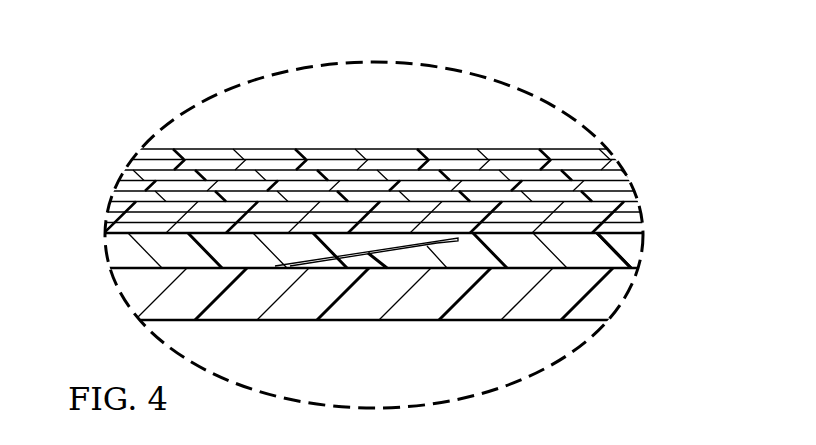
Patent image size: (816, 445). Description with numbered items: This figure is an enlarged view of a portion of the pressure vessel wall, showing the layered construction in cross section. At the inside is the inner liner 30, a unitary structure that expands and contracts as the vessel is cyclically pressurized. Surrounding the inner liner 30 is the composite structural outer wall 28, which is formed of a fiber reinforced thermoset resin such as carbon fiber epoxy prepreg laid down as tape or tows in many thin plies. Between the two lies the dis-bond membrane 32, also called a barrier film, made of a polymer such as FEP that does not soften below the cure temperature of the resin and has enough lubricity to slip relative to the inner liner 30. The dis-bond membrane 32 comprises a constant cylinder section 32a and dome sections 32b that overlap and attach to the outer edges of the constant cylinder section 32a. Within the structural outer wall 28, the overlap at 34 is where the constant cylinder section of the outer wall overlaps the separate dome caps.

The composite structural outer wall 28 is at (453, 165).
The inner liner 30 is at (340, 324).
The dis-bond membrane 32 is at (652, 241).
The constant cylinder section 32a is at (115, 259).
The dome section 32b is at (646, 257).
The overlap 34 is at (402, 258).